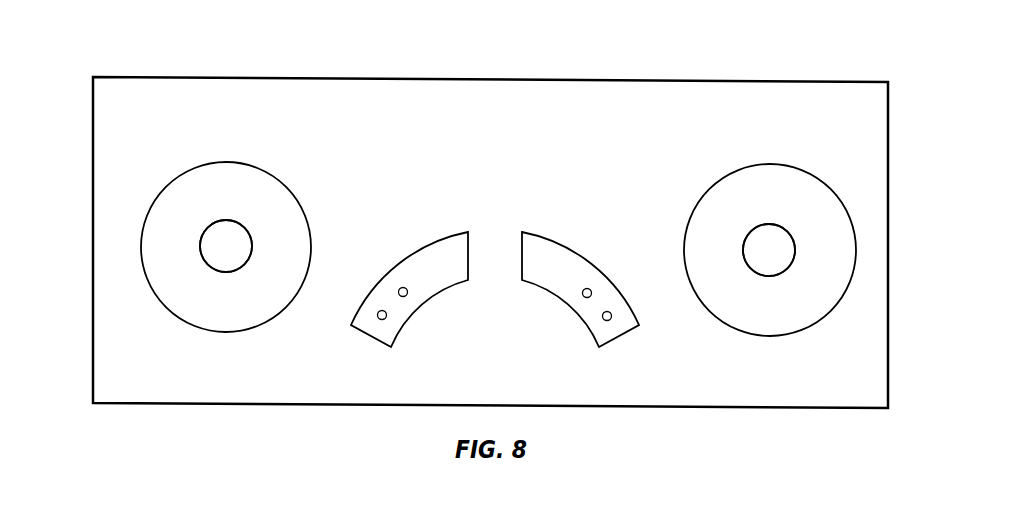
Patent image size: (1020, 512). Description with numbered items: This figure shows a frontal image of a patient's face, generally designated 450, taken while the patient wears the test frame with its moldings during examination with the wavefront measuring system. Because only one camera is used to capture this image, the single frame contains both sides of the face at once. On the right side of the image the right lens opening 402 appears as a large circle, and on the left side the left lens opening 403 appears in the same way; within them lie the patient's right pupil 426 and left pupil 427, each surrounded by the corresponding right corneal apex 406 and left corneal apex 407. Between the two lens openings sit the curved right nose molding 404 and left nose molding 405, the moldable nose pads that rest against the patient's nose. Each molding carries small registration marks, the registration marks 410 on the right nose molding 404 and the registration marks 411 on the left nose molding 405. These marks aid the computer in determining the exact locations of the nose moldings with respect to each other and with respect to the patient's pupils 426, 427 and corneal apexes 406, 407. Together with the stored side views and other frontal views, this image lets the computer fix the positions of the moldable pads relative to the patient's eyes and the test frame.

The frontal image of a patient's face 450 is at (838, 54).
The right lens opening 402 is at (297, 225).
The left lens opening 403 is at (702, 230).
The right nose molding 404 is at (452, 252).
The left nose molding 405 is at (542, 253).
The right corneal apex 406 is at (227, 260).
The left corneal apex 407 is at (773, 268).
The registration marks 410 is at (388, 316).
The registration marks 411 is at (602, 317).
The right pupil 426 is at (237, 223).
The left pupil 427 is at (780, 225).